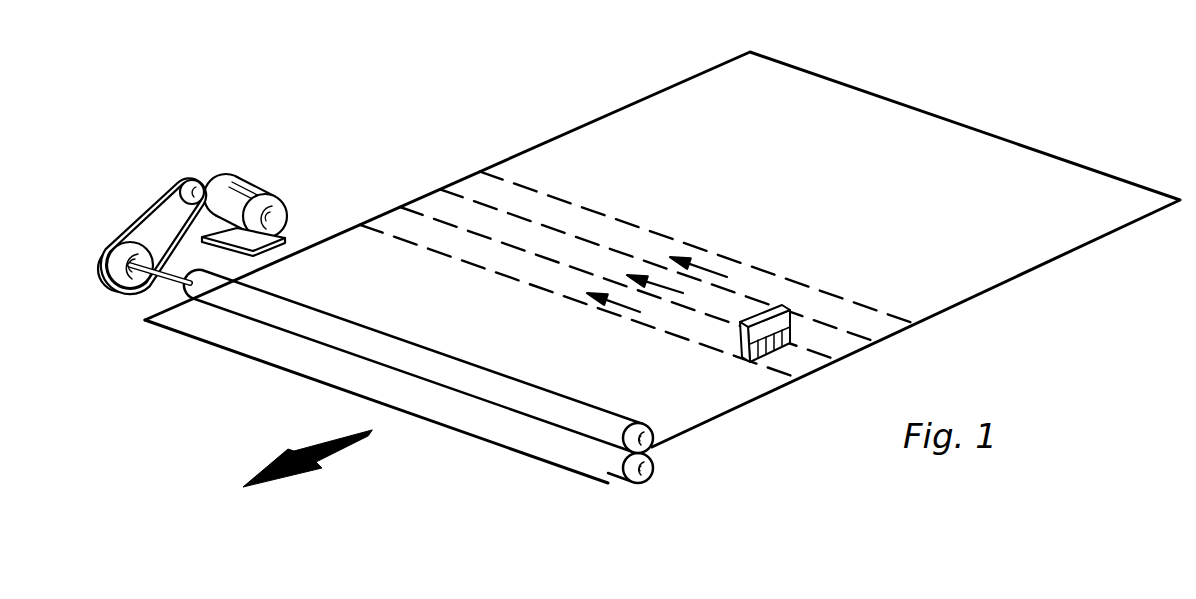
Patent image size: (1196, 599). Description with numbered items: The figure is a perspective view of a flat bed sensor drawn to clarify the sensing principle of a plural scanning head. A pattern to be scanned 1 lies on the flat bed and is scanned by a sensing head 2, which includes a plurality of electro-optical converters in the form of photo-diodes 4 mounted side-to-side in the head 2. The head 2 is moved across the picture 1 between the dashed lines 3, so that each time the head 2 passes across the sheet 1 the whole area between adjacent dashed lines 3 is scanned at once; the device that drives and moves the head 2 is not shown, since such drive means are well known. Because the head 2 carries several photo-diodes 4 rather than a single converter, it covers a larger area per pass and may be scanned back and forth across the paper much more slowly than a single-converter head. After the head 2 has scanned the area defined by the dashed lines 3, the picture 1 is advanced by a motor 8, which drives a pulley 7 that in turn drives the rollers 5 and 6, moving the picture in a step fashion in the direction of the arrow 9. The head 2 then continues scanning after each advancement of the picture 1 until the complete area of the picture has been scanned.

The pattern to be scanned 1 is at (615, 133).
The sensing head 2 is at (742, 340).
The dashed lines 3 is at (638, 275).
The photo-diodes 4 is at (780, 347).
The roller 5 is at (653, 480).
The roller 6 is at (655, 445).
The pulley 7 is at (130, 281).
The motor 8 is at (260, 182).
The arrow 9 is at (282, 458).